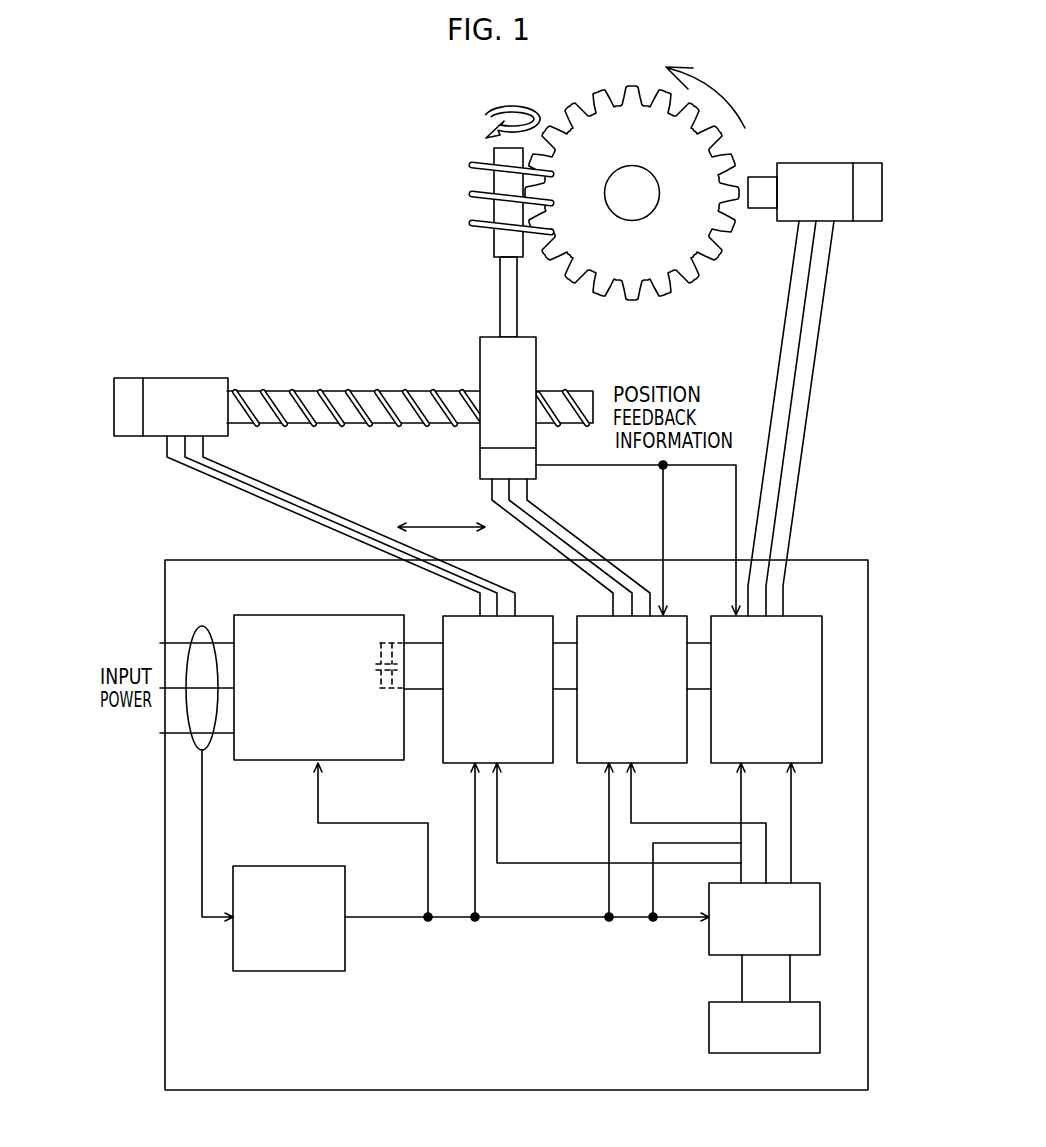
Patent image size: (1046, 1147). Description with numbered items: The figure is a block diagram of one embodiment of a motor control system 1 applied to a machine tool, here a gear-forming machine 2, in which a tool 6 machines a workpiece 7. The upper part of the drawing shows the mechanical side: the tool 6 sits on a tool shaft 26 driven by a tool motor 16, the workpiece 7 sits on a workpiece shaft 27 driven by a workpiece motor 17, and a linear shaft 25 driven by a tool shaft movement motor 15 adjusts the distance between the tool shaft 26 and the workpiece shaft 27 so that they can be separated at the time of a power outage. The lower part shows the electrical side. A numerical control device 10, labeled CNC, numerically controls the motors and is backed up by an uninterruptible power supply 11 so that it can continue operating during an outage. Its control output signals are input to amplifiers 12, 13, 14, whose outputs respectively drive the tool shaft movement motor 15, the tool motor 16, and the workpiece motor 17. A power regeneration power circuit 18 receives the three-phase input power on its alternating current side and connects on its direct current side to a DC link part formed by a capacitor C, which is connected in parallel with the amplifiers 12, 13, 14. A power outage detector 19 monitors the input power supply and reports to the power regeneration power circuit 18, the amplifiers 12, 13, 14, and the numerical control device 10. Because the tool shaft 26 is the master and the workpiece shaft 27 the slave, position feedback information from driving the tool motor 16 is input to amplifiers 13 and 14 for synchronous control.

The motor control system 1 is at (165, 1032).
The gear-forming machine 2 is at (311, 146).
The tool 6 is at (470, 188).
The workpiece 7 is at (728, 237).
The numerical control device 10 is at (820, 918).
The uninterruptible power supply 11 is at (820, 1022).
The amplifier 12 is at (526, 763).
The amplifier 13 is at (660, 763).
The amplifier 14 is at (802, 763).
The tool shaft movement motor 15 is at (128, 438).
The tool motor 16 is at (538, 358).
The workpiece motor 17 is at (867, 221).
The power regeneration power circuit 18 is at (277, 615).
The power outage detector 19 is at (313, 972).
The linear shaft 25 is at (310, 390).
The tool shaft 26 is at (498, 295).
The workpiece shaft 27 is at (632, 193).
The capacitor C is at (378, 688).